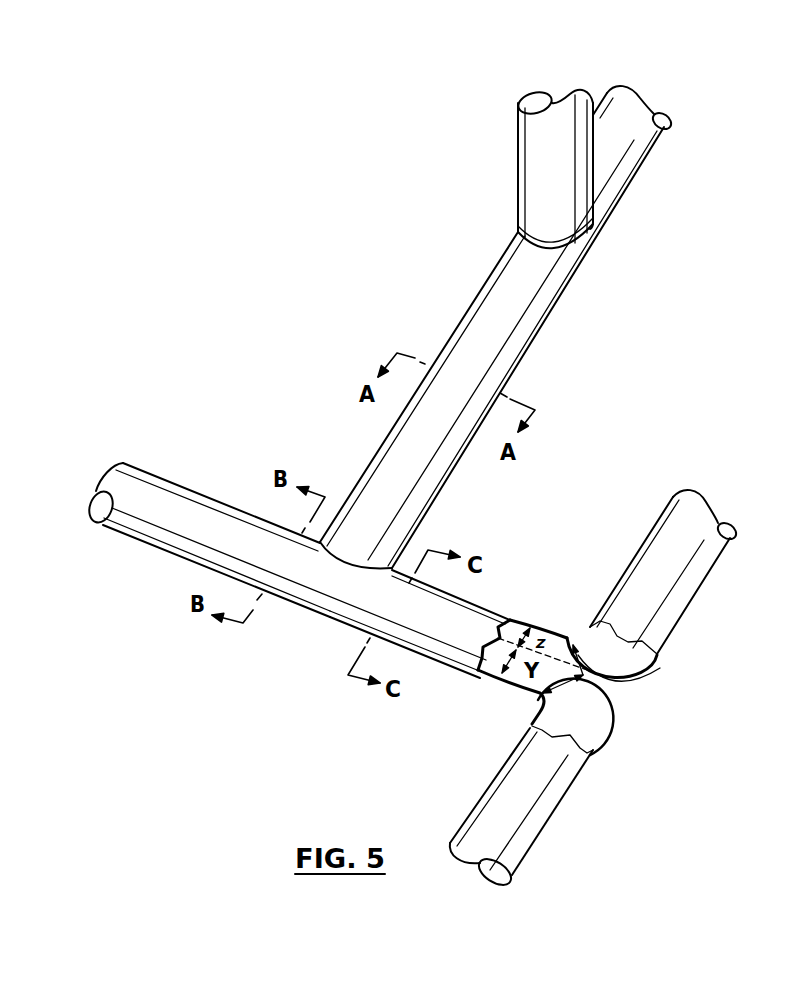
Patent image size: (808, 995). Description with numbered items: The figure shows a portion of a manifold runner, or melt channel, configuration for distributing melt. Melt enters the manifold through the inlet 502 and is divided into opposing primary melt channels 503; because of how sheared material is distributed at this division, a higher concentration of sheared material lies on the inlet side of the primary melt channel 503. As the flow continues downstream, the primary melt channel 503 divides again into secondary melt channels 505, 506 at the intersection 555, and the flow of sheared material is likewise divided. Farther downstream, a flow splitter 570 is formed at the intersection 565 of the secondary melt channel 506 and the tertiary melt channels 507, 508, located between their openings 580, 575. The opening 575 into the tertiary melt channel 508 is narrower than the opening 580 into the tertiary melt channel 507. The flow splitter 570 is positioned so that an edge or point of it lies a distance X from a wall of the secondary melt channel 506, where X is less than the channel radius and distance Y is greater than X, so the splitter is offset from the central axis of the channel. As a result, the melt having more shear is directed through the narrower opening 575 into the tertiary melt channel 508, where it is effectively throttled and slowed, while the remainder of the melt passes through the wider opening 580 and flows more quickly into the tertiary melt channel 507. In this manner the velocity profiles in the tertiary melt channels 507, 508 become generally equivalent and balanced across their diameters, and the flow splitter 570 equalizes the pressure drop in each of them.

The inlet 502 is at (518, 144).
The primary melt channel 503 is at (450, 336).
The secondary melt channel 505 is at (123, 534).
The secondary melt channel 506 is at (410, 652).
The tertiary melt channel 507 is at (565, 802).
The tertiary melt channel 508 is at (693, 603).
The intersection 555 is at (330, 578).
The intersection 565 is at (562, 640).
The flow splitter 570 is at (622, 677).
The opening 575 is at (627, 666).
The opening 580 is at (598, 706).